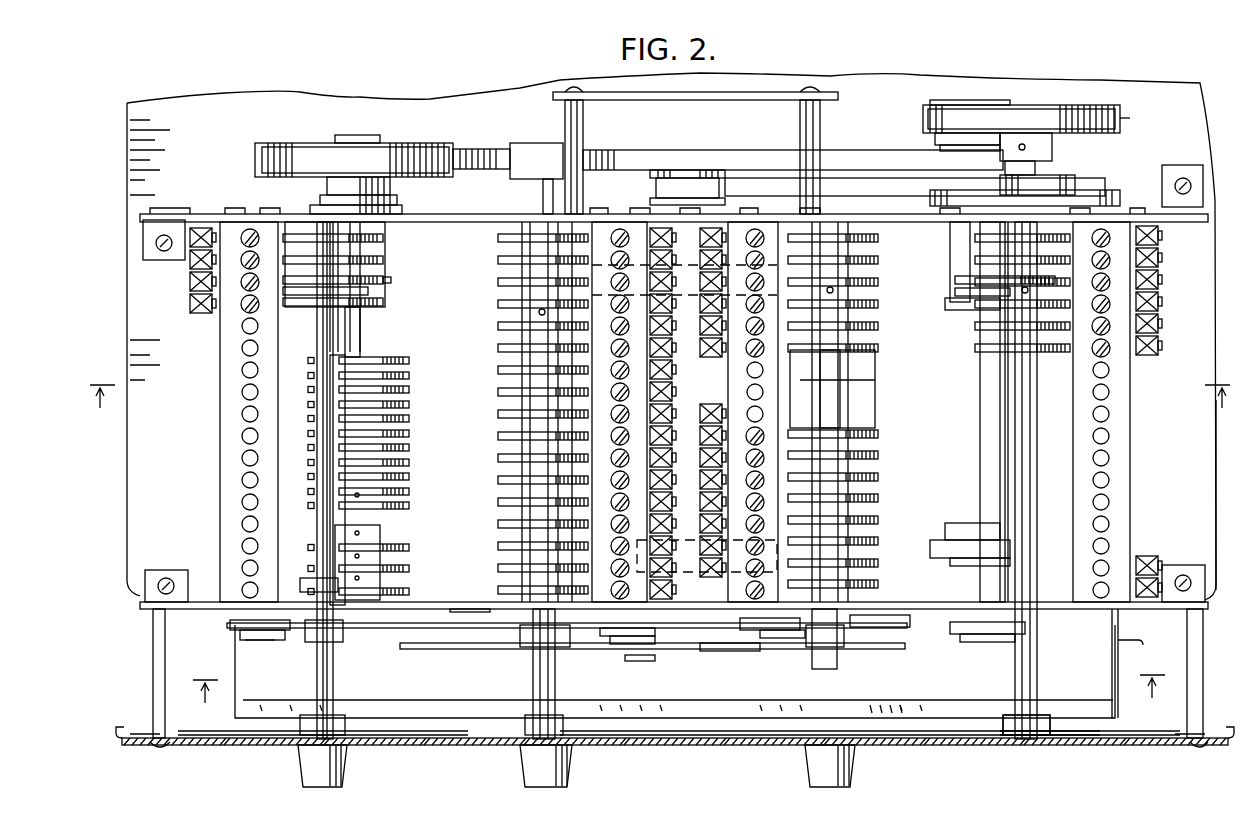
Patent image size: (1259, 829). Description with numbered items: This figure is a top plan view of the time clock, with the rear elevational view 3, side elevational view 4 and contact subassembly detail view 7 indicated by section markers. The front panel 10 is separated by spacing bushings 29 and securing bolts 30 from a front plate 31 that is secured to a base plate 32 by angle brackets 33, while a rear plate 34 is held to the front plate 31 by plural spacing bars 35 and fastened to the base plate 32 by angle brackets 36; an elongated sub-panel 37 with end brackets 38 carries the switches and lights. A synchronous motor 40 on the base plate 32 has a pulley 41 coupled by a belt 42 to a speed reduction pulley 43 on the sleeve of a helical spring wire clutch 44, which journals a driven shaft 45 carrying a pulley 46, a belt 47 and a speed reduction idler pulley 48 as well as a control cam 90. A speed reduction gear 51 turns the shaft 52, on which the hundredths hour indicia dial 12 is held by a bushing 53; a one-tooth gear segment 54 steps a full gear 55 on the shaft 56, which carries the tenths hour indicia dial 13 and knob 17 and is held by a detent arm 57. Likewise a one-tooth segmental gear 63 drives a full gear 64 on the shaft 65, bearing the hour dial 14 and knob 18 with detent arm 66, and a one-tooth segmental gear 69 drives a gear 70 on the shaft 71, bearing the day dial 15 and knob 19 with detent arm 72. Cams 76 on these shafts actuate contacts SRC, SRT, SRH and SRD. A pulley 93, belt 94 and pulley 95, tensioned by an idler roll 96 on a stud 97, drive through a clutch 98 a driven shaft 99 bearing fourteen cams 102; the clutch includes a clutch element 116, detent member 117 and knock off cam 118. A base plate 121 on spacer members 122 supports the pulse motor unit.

The rear elevational view 3 is at (679, 700).
The side elevational view 4 is at (142, 748).
The contact subassembly detail view 7 is at (660, 410).
The front panel 10 is at (948, 746).
The hundredths hour indicia dial 12 is at (1130, 730).
The tenths hour indicia dial 13 is at (929, 716).
The hour dial 14 is at (630, 710).
The day dial 15 is at (398, 716).
The manually adjustable knob 17 is at (844, 760).
The knob 18 is at (560, 760).
The knob 19 is at (332, 760).
The spacing bushings 29 is at (153, 637).
The securing bolts 30 is at (155, 746).
The front plate 31 is at (935, 602).
The base plate 32 is at (1215, 465).
The angle brackets 33 is at (145, 572).
The rear plate 34 is at (895, 228).
The spacing bars 35 is at (228, 444).
The angle brackets 36 is at (138, 229).
The sub-panel 37 is at (867, 700).
The end brackets 38 is at (1132, 663).
The synchronous motor 40 is at (812, 360).
The pulley 41 is at (693, 170).
The belt 42 is at (852, 185).
The speed reduction pulley 43 is at (1060, 165).
The helical spring wire clutch 44 is at (941, 258).
The driven shaft 45 is at (970, 410).
The pulley 46 is at (945, 100).
The belt 47 is at (1130, 118).
The speed reduction idler pulley 48 is at (1078, 105).
The speed reduction gear 51 is at (1125, 192).
The shaft 52 is at (1028, 388).
The bushing 53 is at (1040, 718).
The one-tooth gear segment 54 is at (957, 627).
The full gear 55 is at (897, 627).
The shaft 56 is at (830, 404).
The detent arm 57 is at (795, 646).
The one-tooth segmental gear 63 is at (745, 648).
The full gear 64 is at (593, 640).
The shaft 65 is at (545, 686).
The detent arm 66 is at (625, 655).
The one-tooth segmental gear 69 is at (453, 608).
The gear 70 is at (390, 642).
The shaft 71 is at (315, 318).
The detent arm 72 is at (263, 638).
The cams 76 is at (362, 254).
The cam 90 is at (935, 543).
The pulley 93 is at (925, 150).
The belt 94 is at (751, 150).
The pulley 95 is at (420, 143).
The idler roll 96 is at (523, 145).
The stud 97 is at (542, 194).
The helical spring wire clutch 98 is at (454, 262).
The driven shaft 99 is at (360, 325).
The cams 102 is at (410, 397).
The clutch element 116 is at (383, 294).
The detent member 117 is at (383, 308).
The knock off cam 118 is at (386, 278).
The base plate 121 is at (650, 100).
The spacer members 122 is at (578, 115).
The day contacts SRD is at (189, 303).
The contact assembly SRC is at (1162, 240).
The contacts SRT is at (715, 343).
The contacts SRH is at (693, 426).